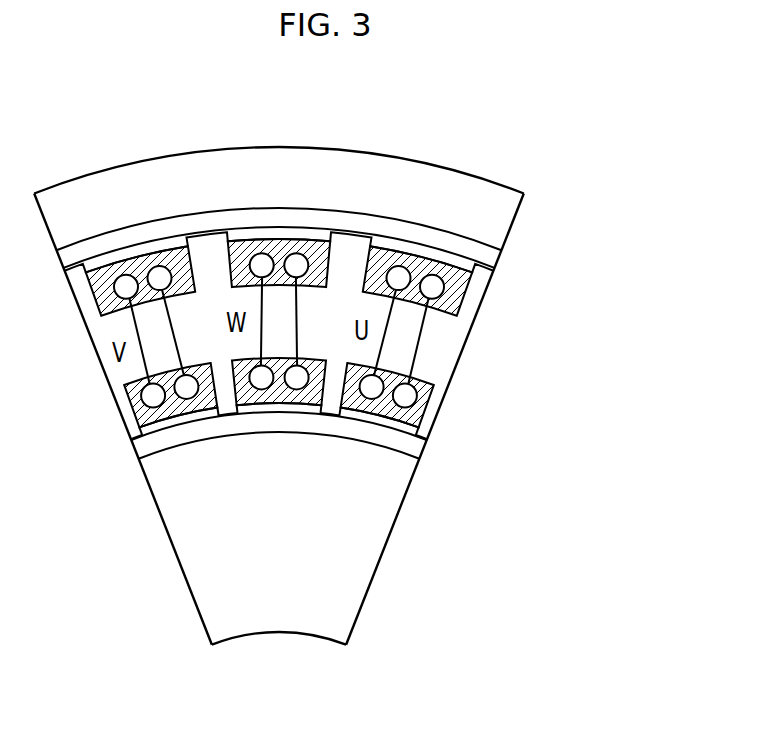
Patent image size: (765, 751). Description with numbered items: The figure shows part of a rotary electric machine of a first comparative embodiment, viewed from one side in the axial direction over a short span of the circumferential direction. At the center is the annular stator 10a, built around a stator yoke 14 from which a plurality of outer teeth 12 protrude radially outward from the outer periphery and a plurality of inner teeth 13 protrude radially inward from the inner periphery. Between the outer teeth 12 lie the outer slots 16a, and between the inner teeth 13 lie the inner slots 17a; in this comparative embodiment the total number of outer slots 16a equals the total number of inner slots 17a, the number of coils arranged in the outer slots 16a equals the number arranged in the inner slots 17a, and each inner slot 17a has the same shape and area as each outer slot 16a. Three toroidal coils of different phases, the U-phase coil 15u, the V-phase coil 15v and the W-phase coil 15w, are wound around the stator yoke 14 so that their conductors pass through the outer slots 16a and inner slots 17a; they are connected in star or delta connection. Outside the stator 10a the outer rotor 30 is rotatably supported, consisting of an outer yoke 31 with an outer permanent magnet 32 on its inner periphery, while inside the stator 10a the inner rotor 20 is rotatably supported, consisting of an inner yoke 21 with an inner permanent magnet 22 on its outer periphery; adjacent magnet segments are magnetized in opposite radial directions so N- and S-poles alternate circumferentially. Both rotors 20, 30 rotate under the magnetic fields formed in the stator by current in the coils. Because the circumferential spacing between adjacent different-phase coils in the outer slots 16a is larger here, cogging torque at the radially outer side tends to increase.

The stator 10a is at (472, 332).
The outer teeth 12 is at (200, 236).
The inner teeth 13 is at (232, 414).
The stator yoke 14 is at (453, 364).
The U-phase coil 15u is at (430, 272).
The V-phase coil 15v is at (122, 274).
The W-phase coil 15w is at (273, 241).
The outer slots 16a is at (317, 241).
The inner slots 17a is at (308, 405).
The inner rotor 20 is at (372, 602).
The inner yoke 21 is at (355, 548).
The inner permanent magnet 22 is at (410, 445).
The outer rotor 30 is at (513, 235).
The outer yoke 31 is at (520, 191).
The outer permanent magnet 32 is at (484, 257).